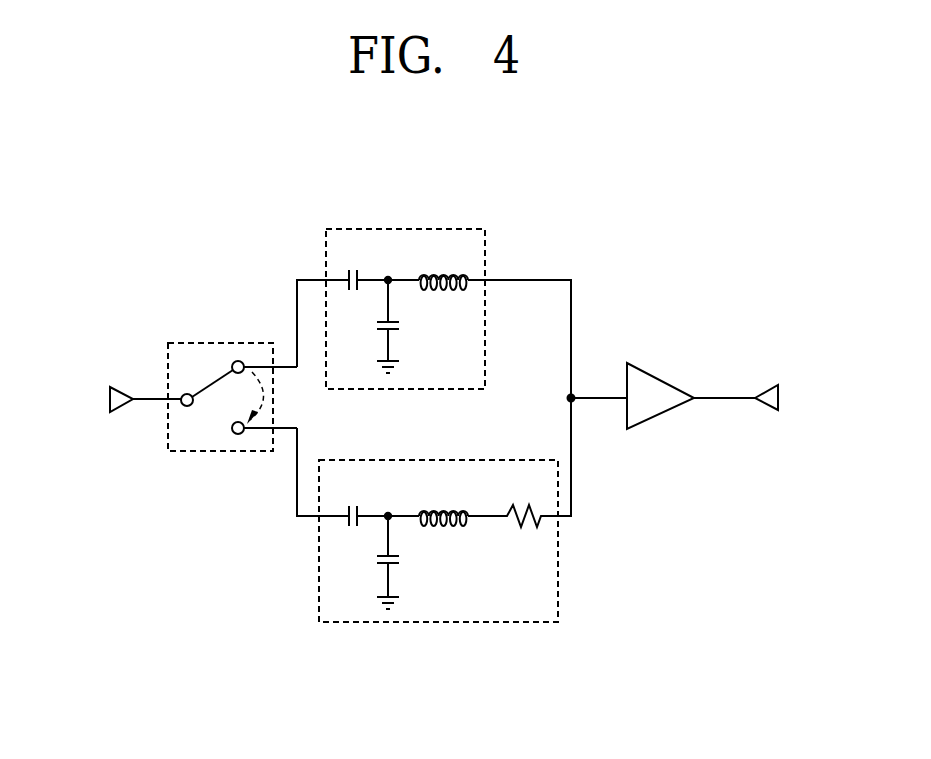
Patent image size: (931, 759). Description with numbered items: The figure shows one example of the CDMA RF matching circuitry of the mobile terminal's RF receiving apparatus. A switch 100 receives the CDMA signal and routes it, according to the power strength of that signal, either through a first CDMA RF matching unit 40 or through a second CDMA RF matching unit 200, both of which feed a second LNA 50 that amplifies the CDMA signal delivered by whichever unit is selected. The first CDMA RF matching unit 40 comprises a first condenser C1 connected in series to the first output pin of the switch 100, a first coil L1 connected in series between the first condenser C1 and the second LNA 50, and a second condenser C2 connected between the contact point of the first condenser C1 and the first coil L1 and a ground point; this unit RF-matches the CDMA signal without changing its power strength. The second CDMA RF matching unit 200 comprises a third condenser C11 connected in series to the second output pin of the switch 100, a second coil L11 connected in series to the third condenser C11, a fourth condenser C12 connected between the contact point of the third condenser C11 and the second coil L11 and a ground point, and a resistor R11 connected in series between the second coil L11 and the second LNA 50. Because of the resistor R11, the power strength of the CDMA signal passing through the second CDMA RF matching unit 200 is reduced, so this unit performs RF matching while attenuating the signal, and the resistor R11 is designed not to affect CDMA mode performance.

The switch 100 is at (223, 343).
The first CDMA RF matching unit 40 is at (405, 283).
The second CDMA RF matching unit 200 is at (438, 514).
The second LNA 50 is at (664, 377).
The first condenser C1 is at (351, 266).
The first coil L1 is at (443, 266).
The second condenser C2 is at (400, 326).
The third condenser C11 is at (356, 503).
The second coil L11 is at (443, 503).
The resistor R11 is at (523, 503).
The fourth condenser C12 is at (405, 562).